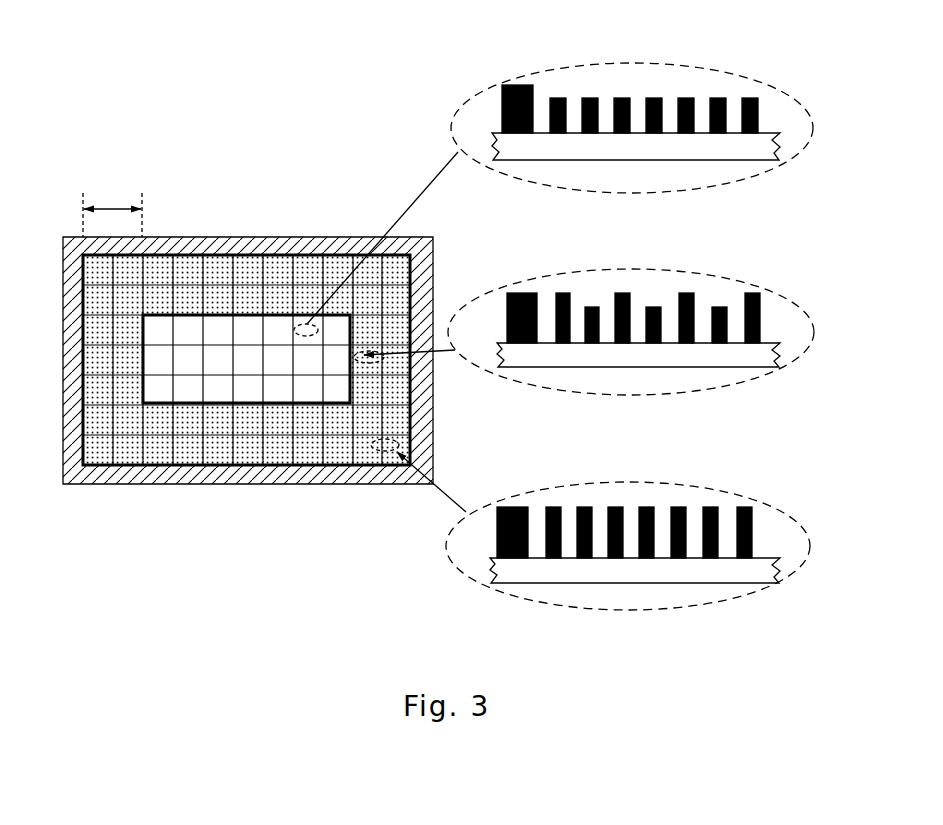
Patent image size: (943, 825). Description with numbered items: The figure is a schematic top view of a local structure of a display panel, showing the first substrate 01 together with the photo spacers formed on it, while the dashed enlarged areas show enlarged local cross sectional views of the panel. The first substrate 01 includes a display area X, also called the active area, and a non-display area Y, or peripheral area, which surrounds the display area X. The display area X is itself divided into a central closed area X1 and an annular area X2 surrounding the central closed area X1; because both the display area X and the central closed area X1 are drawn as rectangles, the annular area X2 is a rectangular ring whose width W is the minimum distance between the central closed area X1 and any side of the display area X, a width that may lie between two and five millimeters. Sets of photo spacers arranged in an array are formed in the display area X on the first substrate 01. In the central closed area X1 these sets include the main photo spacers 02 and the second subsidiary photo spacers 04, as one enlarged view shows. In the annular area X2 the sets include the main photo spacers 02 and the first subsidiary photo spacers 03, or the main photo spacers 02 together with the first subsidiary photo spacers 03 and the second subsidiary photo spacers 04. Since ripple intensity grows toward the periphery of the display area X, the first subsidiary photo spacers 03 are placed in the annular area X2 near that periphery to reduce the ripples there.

The first substrate 01 is at (526, 158).
The main photo spacers 02 is at (511, 84).
The first subsidiary photo spacers 03 is at (622, 292).
The second subsidiary photo spacers 04 is at (589, 97).
The width of the annular area W is at (112, 214).
The display area X is at (246, 412).
The central closed area X1 is at (243, 377).
The annular area X2 is at (275, 431).
The non-display area Y is at (122, 484).